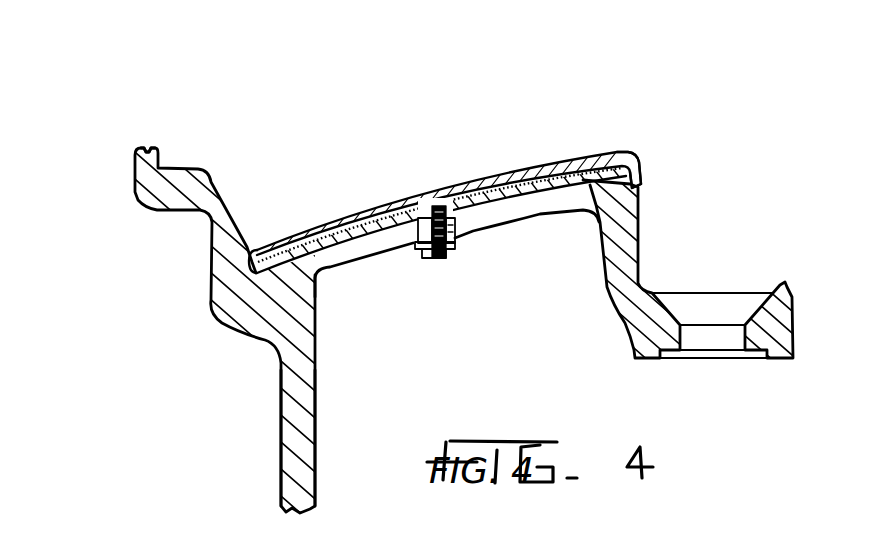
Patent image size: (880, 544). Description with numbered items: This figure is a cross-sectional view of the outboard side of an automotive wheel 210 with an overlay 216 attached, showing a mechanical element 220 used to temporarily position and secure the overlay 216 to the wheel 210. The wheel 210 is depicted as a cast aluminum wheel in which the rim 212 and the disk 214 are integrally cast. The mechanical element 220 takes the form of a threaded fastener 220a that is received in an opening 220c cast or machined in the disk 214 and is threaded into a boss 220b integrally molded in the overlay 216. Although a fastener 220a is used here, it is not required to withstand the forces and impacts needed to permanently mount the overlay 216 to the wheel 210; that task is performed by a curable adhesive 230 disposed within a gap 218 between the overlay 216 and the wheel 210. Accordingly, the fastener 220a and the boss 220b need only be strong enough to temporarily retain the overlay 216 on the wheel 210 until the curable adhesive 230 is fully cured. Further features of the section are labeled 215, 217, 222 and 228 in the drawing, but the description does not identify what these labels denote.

The wheel 210 is at (277, 140).
The rim 212 is at (135, 190).
The disk 214 is at (538, 214).
The rim web 215 is at (281, 460).
The overlay 216 is at (492, 185).
The lip 217 is at (639, 160).
The gap 218 is at (278, 255).
The mechanical element 220 is at (466, 241).
The threaded fastener 220a is at (420, 258).
The boss 220b is at (415, 222).
The opening 220c is at (462, 235).
The rim bead 222 is at (146, 147).
The rim flange 228 is at (636, 230).
The curable adhesive 230 is at (340, 230).